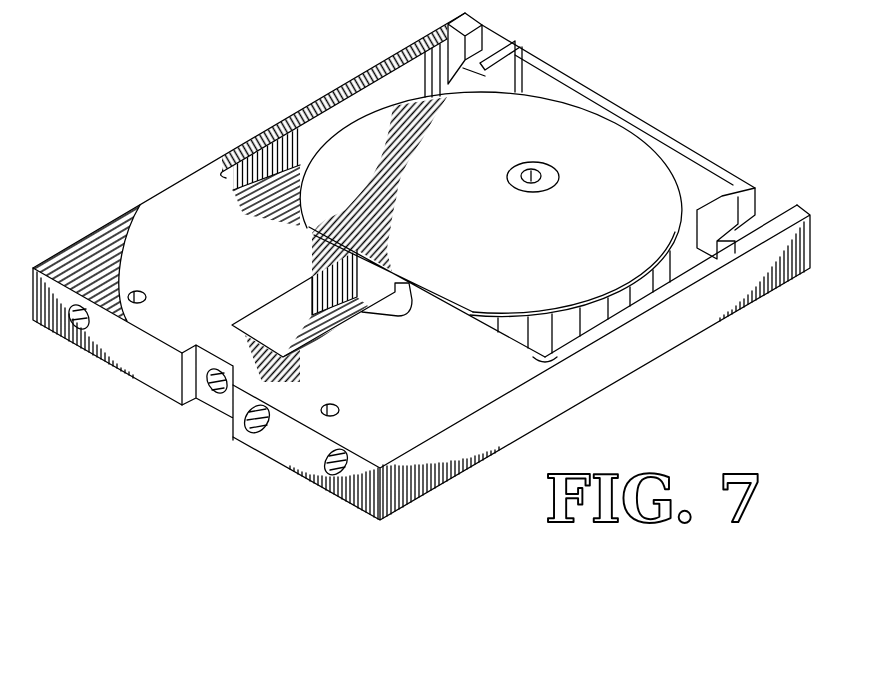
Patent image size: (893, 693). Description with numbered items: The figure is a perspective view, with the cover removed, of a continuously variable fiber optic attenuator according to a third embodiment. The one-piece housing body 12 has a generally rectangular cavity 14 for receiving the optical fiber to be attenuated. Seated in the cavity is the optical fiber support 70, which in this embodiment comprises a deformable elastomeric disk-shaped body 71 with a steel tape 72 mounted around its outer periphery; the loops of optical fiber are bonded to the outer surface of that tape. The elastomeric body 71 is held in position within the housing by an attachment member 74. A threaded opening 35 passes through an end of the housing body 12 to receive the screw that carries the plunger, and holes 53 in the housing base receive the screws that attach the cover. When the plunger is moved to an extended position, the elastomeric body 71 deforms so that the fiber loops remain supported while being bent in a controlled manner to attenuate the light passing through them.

The housing body 12 is at (614, 367).
The cavity 14 is at (686, 210).
The threaded opening 35 is at (218, 392).
The holes 53 is at (528, 173).
The optical fiber support 70 is at (570, 105).
The elastomeric disk-shaped body 71 is at (340, 152).
The steel tape 72 is at (659, 281).
The attachment member 74 is at (553, 176).